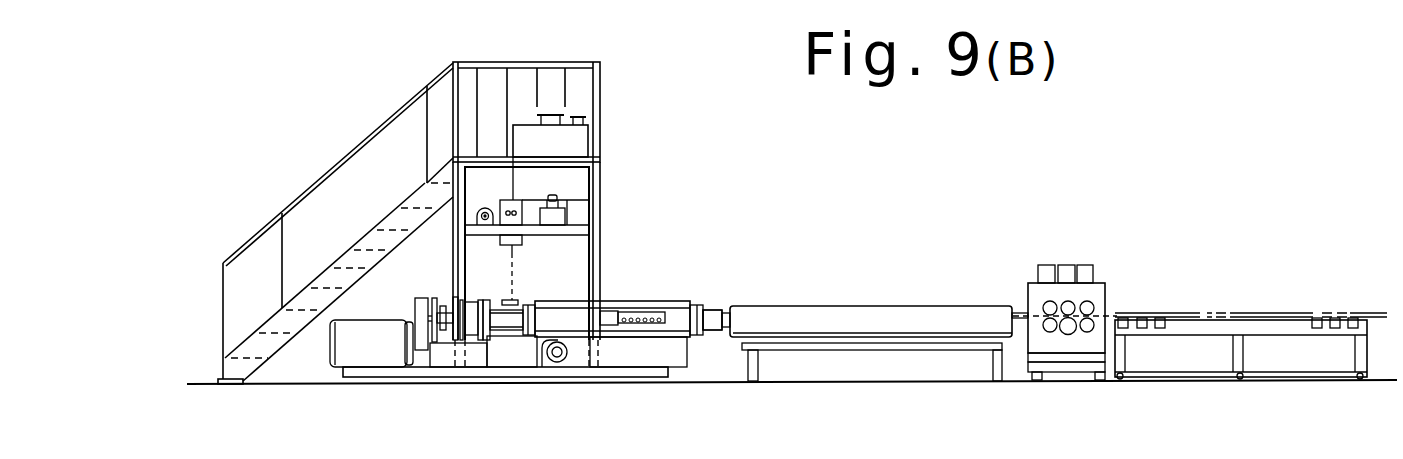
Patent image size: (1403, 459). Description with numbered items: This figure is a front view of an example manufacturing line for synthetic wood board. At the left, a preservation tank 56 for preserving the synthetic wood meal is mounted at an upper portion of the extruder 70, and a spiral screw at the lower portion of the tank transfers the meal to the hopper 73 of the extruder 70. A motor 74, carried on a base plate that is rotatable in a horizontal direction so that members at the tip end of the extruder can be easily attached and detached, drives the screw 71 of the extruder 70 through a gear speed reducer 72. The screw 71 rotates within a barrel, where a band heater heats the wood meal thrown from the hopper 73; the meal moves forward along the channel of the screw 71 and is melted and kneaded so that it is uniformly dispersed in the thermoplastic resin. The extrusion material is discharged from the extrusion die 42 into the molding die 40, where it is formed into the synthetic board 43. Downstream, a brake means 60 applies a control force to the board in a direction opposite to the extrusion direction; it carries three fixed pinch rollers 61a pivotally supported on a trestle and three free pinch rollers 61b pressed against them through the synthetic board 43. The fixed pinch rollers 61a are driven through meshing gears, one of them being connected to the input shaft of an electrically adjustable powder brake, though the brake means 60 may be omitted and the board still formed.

The molding die 40 is at (855, 298).
The extrusion die 42 is at (719, 307).
The synthetic board 43 is at (1273, 312).
The preservation tank 56 is at (578, 138).
The brake means 60 is at (1072, 272).
The fixed pinch rollers 61a is at (1046, 320).
The free pinch rollers 61b is at (1090, 300).
The extruder 70 is at (682, 284).
The screw 71 is at (630, 312).
The gear speed reducer 72 is at (470, 300).
The hopper 73 is at (506, 299).
The motor 74 is at (372, 331).